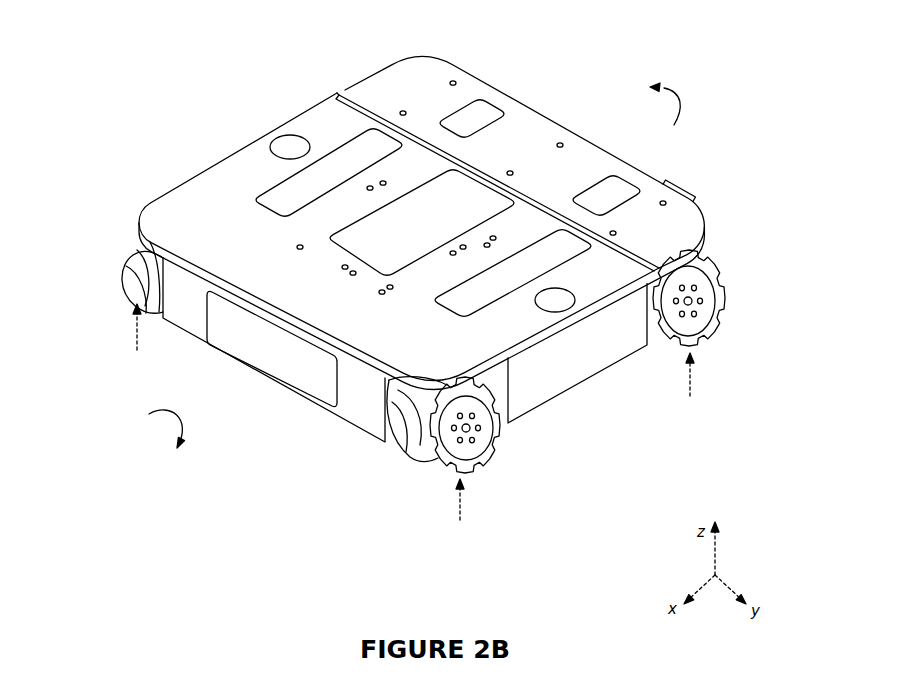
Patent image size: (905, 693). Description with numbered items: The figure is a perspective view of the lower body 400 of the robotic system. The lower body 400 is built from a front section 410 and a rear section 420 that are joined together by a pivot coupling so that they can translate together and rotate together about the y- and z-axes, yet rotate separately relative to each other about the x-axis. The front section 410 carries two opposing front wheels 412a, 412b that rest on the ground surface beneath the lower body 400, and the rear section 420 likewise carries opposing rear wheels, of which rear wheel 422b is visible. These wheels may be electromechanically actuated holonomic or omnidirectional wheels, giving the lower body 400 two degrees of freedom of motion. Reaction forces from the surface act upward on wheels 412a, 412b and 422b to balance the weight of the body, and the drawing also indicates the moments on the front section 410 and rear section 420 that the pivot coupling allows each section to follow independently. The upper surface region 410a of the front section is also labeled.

The lower body 400 is at (306, 39).
The front section 410 is at (275, 353).
The top surface of body 410a is at (222, 186).
The front wheel 412a is at (130, 277).
The front wheel 412b is at (453, 447).
The rear section 420 is at (533, 130).
The rear wheel 422b is at (701, 283).